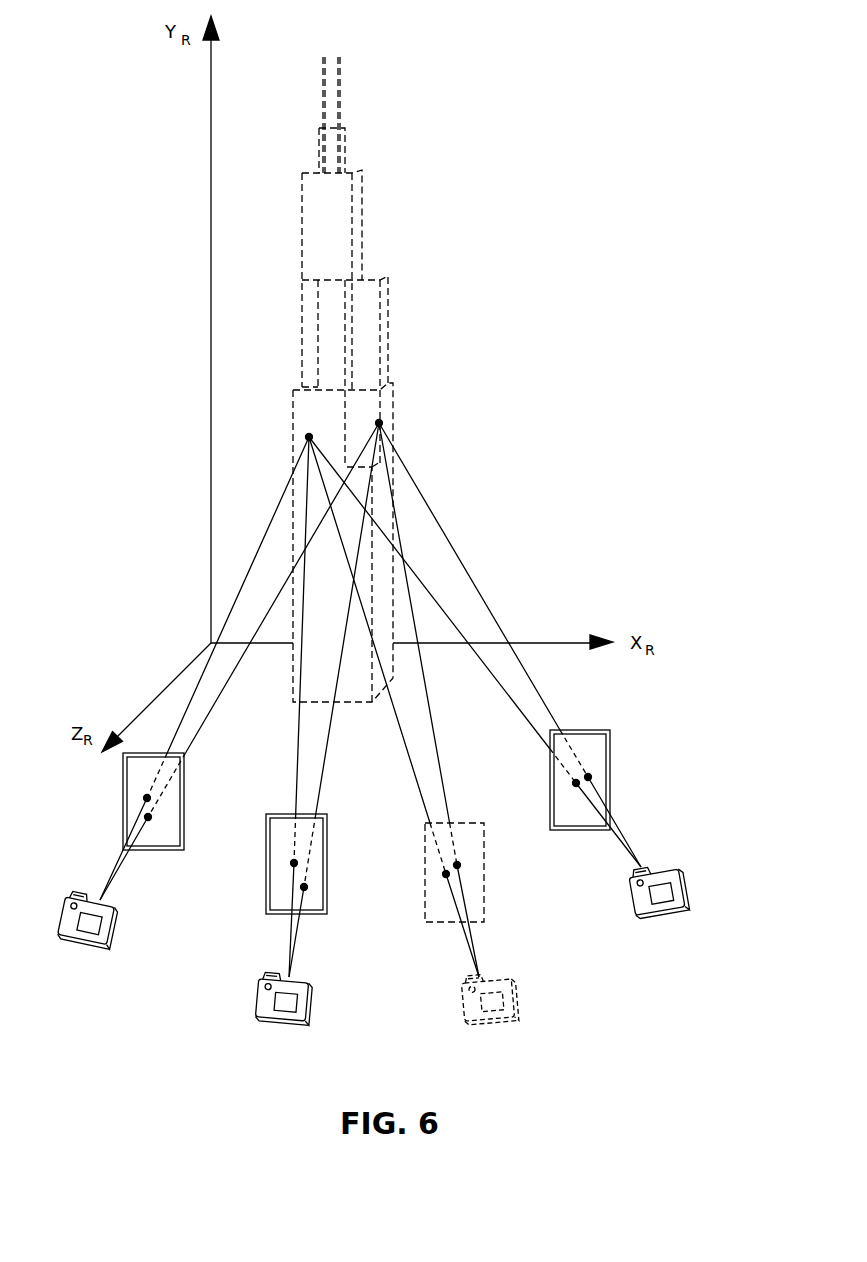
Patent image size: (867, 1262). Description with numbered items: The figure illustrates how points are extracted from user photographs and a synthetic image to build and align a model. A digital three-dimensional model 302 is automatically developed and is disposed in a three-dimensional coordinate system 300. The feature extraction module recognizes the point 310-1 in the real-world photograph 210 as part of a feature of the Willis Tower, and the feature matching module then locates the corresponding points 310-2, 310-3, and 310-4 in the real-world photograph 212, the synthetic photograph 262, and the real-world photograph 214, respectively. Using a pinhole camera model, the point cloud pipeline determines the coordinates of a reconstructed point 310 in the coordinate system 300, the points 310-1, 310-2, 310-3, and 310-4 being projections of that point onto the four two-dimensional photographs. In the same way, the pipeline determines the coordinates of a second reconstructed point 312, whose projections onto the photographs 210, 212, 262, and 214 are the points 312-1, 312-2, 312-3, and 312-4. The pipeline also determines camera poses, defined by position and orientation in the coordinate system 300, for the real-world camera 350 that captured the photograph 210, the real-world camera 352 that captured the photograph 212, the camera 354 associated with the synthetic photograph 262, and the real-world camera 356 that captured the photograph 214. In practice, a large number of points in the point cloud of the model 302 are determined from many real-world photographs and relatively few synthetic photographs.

The 3D coordinate system 300 is at (555, 100).
The digital 3D model 302 is at (388, 315).
The reconstructed point 310 is at (307, 435).
The reconstructed point 312 is at (381, 423).
The point 310-1 is at (146, 798).
The point 312-1 is at (150, 817).
The real-world photograph 210 is at (151, 852).
The real-world camera 350 is at (72, 938).
The point 310-2 is at (292, 864).
The point 312-2 is at (306, 887).
The real-world photograph 212 is at (309, 916).
The real-world camera 352 is at (272, 1022).
The point 310-3 is at (446, 876).
The point 312-3 is at (459, 865).
The synthetic photograph 262 is at (486, 910).
The camera 354 is at (490, 1022).
The point 310-4 is at (574, 784).
The point 312-4 is at (590, 776).
The real-world photograph 214 is at (612, 800).
The real-world camera 356 is at (672, 910).